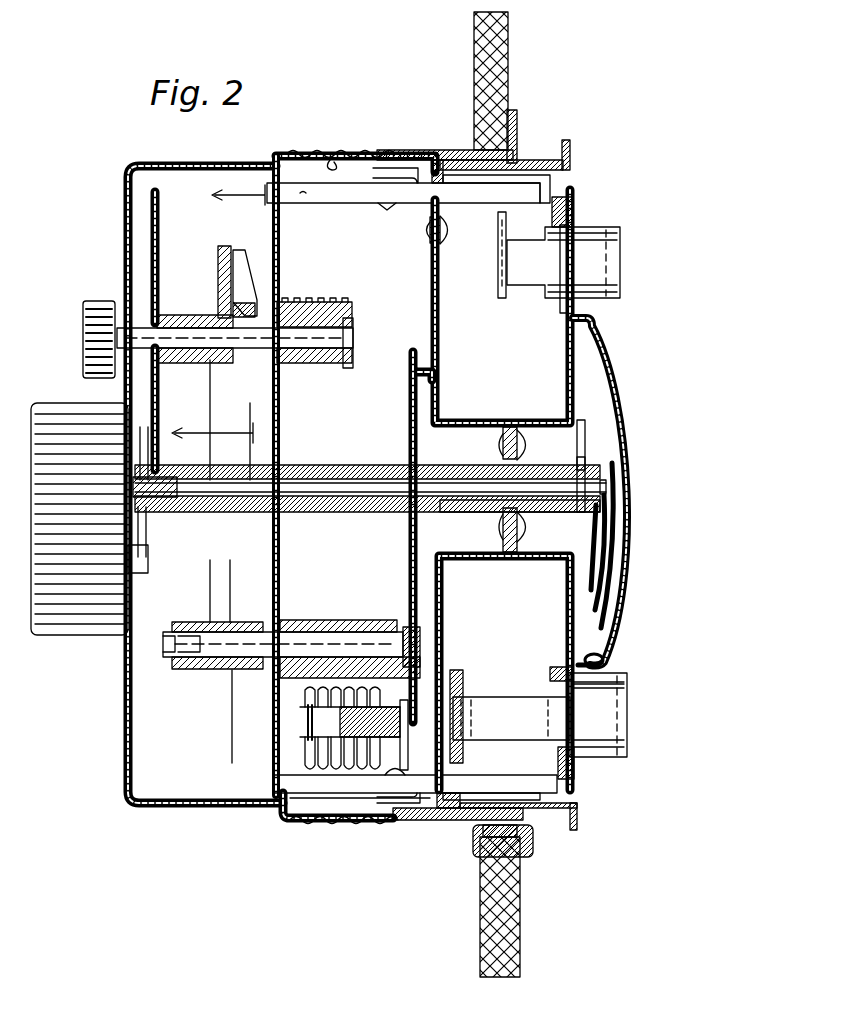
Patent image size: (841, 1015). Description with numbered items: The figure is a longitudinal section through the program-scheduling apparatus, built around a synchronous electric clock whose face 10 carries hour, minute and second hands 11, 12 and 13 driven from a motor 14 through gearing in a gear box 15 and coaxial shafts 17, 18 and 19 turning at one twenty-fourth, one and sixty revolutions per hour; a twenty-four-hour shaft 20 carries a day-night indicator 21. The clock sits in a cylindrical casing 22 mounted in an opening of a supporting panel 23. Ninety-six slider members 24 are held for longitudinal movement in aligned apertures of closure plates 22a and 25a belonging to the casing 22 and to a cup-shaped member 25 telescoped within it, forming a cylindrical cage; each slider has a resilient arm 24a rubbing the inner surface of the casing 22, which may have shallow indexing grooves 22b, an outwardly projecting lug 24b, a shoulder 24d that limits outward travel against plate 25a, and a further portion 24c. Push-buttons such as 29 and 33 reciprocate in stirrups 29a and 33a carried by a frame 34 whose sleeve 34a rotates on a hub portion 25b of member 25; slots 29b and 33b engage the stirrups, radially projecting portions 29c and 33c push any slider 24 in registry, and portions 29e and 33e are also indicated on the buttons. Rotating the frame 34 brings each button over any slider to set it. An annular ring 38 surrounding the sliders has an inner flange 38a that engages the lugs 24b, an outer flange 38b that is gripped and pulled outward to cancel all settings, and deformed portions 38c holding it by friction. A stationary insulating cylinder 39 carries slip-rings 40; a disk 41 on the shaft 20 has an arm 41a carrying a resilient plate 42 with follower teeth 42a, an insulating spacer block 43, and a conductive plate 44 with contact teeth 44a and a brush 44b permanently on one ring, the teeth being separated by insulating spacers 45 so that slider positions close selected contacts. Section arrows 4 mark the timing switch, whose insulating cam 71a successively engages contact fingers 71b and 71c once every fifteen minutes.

The section line 4 is at (217, 306).
The face 10 is at (628, 445).
The hour hand 11 is at (597, 577).
The minute hand 12 is at (607, 552).
The second hand 13 is at (616, 520).
The motor 14 is at (78, 640).
The gear box 15 is at (148, 738).
The coaxial shaft 17 is at (378, 465).
The coaxial shaft 18 is at (336, 465).
The coaxial shaft 19 is at (300, 465).
The 24-hour shaft 20 is at (450, 512).
The day-night indicator 21 is at (586, 442).
The cylindrical casing 22 is at (290, 822).
The plate-like closure member 22a is at (280, 225).
The annular shallow grooves 22b is at (330, 153).
The supporting panel 23 is at (521, 917).
The slider members 24 is at (520, 183).
The resilient arm 24a is at (385, 150).
The outwardly projecting lugs 24b is at (545, 180).
The lid notch 24c is at (387, 212).
The shoulders 24d is at (426, 165).
The cup-shaped member 25 is at (519, 140).
The plate-like closure member 25a is at (432, 262).
The hub portion 25b is at (498, 423).
The push-button 29 is at (600, 227).
The U-shaped strap 29a is at (512, 247).
The longitudinal slot 29b is at (570, 304).
The radially projecting portion 29c is at (572, 207).
The bore 29e is at (612, 252).
The push-button 33 is at (615, 757).
The U-shaped strap 33a is at (552, 684).
The longitudinal slot 33b is at (612, 686).
The radially projecting portion 33c is at (575, 772).
The bore 33e is at (622, 720).
The frame 34 is at (600, 672).
The cylindrical sleeve 34a is at (495, 560).
The annular ring 38 is at (540, 810).
The radially inwardly projecting flange 38a is at (438, 160).
The radially outwardly projecting flange 38b is at (573, 148).
The deformed portions 38c is at (470, 855).
The stationary cylindrical member 39 is at (392, 325).
The slip-rings 40 is at (330, 300).
The disk 41 is at (420, 448).
The axially extending arm 41a is at (404, 737).
The slotted resilient plate 42 is at (390, 714).
The follower teeth 42a is at (305, 754).
The spacer block 43 is at (355, 797).
The slotted resilient conductive plate 44 is at (484, 697).
The contact teeth 44a is at (305, 699).
The contact brush 44b is at (445, 674).
The spacers 45 is at (306, 724).
The rotating cam 71a is at (225, 246).
The contact finger 71b is at (240, 266).
The contact finger 71c is at (252, 300).